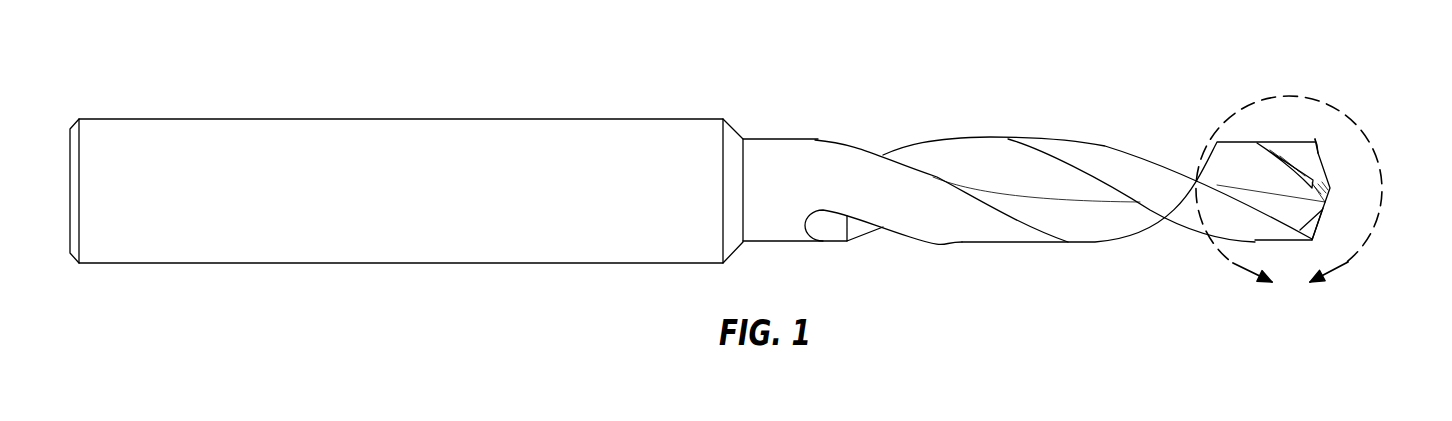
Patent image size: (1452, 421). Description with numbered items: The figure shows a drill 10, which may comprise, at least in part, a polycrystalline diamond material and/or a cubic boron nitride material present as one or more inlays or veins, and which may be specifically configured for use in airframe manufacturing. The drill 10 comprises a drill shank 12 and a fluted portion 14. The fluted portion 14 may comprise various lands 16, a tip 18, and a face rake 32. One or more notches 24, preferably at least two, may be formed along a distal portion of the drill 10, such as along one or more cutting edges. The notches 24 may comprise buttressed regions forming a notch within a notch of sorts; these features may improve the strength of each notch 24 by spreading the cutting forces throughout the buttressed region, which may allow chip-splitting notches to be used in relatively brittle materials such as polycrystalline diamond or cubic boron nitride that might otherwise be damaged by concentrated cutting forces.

The drill 10 is at (743, 184).
The drill shank 12 is at (253, 282).
The fluted portion 14 is at (955, 153).
The lands 16 is at (1072, 163).
The tip 18 is at (1333, 188).
The notches 24 is at (1327, 150).
The face rake 32 is at (1295, 152).